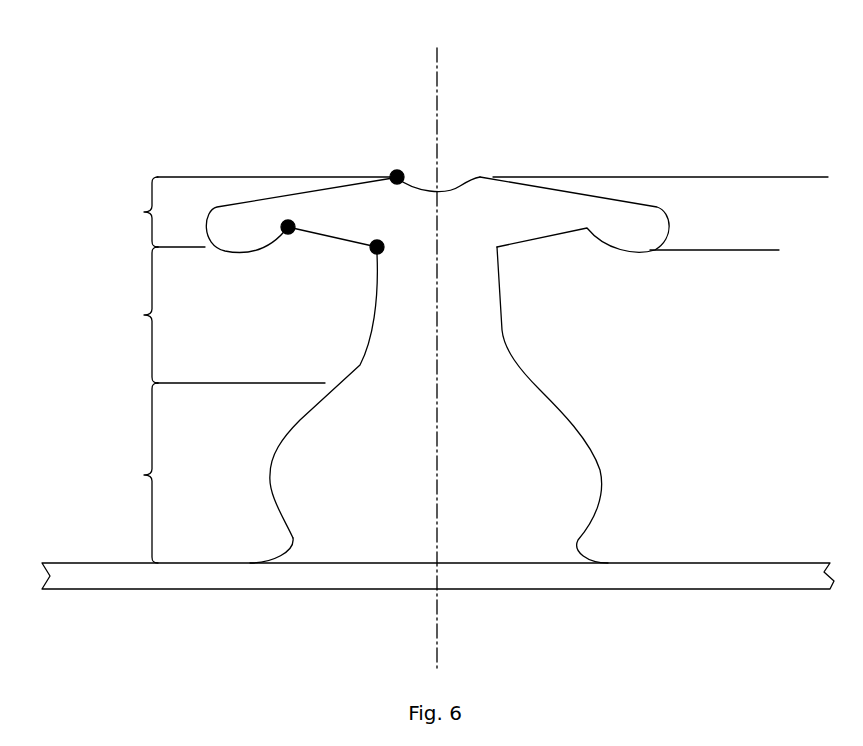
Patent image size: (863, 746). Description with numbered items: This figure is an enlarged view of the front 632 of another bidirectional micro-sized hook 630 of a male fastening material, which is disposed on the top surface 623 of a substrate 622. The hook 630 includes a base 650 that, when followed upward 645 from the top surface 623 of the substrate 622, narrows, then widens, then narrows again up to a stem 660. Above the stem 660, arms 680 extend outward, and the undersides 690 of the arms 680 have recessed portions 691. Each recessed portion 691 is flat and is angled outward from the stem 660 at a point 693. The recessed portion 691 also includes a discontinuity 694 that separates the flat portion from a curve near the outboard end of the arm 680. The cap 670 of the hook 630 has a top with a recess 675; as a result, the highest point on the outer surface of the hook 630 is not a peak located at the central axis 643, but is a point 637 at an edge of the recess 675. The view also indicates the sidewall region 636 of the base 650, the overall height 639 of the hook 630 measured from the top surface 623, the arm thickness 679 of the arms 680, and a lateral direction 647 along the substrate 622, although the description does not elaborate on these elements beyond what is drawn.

The substrate 622 is at (127, 580).
The top surface 623 is at (246, 560).
The bidirectional micro-sized hook 630 is at (210, 148).
The front 632 is at (484, 416).
The sidewall 636 is at (273, 430).
The point 637 is at (393, 165).
The height 639 is at (808, 178).
The central axis 643 is at (437, 65).
The upward direction 645 is at (636, 505).
The lateral direction 647 is at (249, 643).
The base 650 is at (123, 473).
The stem 660 is at (207, 315).
The cap 670 is at (241, 212).
The recess 675 is at (443, 175).
The arm thickness 679 is at (760, 178).
The arms 680 is at (315, 173).
The undersides 690 is at (230, 263).
The recessed portion 691 is at (325, 245).
The point 693 is at (365, 255).
The discontinuity 694 is at (288, 240).